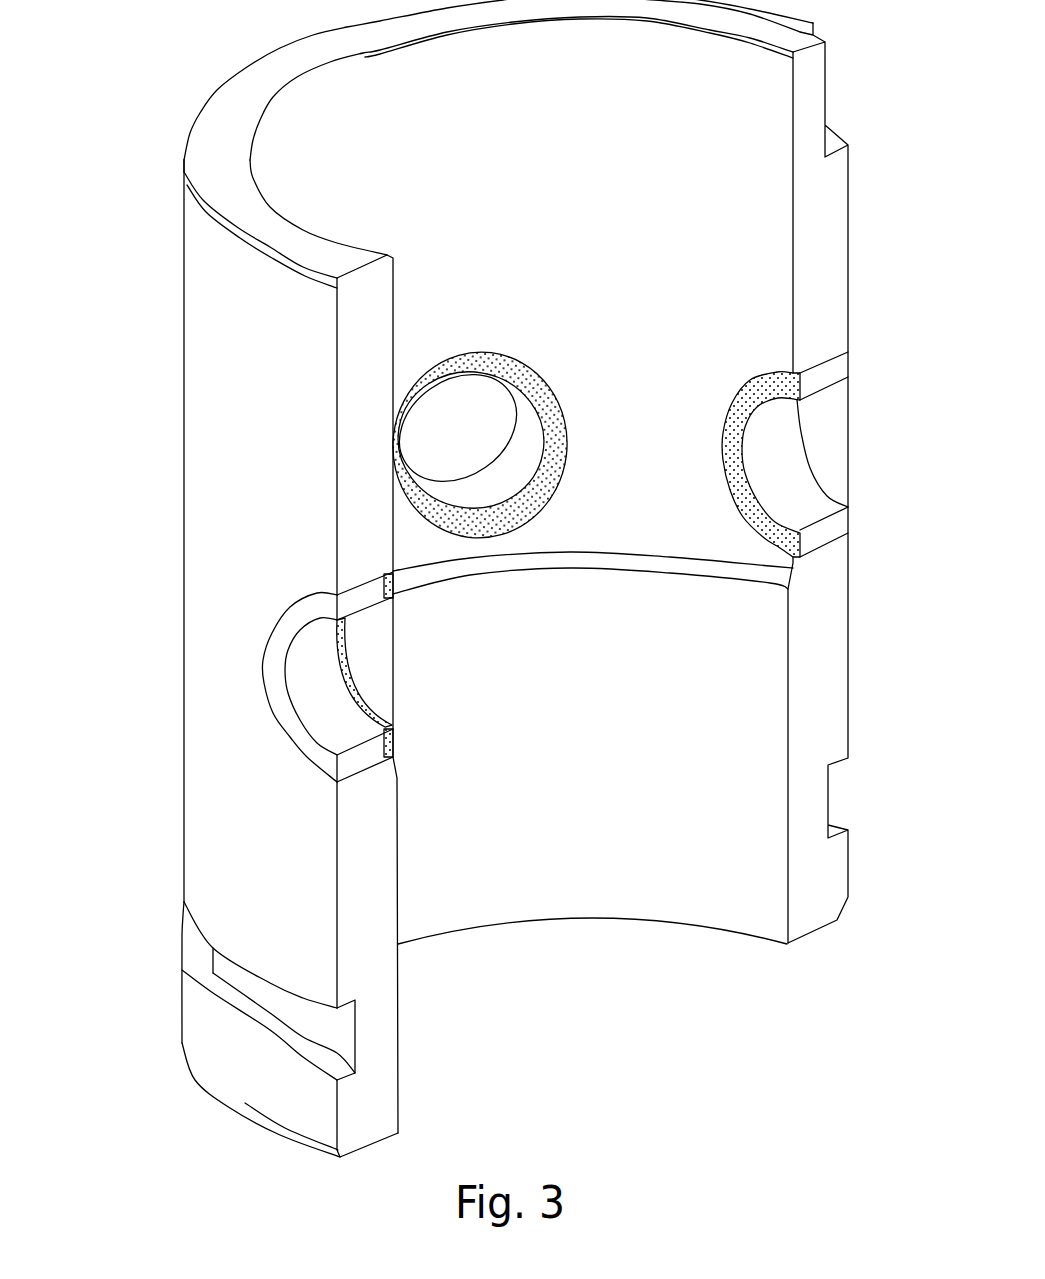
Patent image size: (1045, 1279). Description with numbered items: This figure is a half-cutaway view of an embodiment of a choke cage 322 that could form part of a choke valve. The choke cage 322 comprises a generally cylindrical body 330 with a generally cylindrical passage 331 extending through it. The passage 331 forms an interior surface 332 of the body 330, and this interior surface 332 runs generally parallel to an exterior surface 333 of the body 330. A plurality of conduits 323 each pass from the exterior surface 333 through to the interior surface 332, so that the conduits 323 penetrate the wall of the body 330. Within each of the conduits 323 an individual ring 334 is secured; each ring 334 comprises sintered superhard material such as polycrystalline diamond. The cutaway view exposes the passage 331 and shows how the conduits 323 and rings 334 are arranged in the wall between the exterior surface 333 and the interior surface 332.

The choke cage 322 is at (186, 70).
The conduits 323 is at (470, 443).
The generally cylindrical body 330 is at (225, 318).
The generally cylindrical passage 331 is at (690, 865).
The interior surface 332 is at (533, 878).
The exterior surface 333 is at (227, 847).
The ring 334 is at (287, 711).